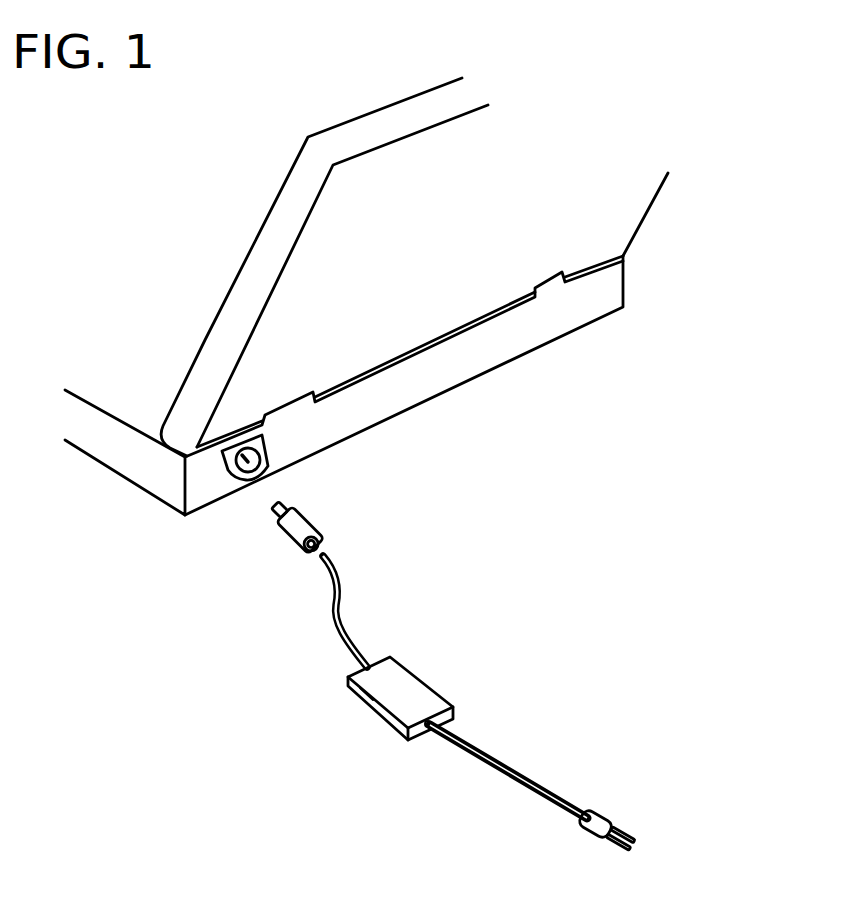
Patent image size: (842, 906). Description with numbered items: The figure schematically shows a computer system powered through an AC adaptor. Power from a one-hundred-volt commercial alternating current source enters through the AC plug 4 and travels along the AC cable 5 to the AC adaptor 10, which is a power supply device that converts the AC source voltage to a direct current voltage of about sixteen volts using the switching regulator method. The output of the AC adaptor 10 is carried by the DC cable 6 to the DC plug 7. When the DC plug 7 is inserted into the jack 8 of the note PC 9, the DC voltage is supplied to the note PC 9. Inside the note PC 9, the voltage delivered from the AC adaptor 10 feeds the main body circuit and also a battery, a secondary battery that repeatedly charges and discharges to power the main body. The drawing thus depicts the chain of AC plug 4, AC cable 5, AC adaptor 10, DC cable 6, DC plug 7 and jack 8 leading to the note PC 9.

The note PC 9 is at (608, 295).
The jack 8 is at (267, 462).
The DC plug 7 is at (310, 522).
The DC cable 6 is at (342, 587).
The AC adaptor 10 is at (412, 683).
The AC cable 5 is at (492, 763).
The AC plug 4 is at (620, 818).